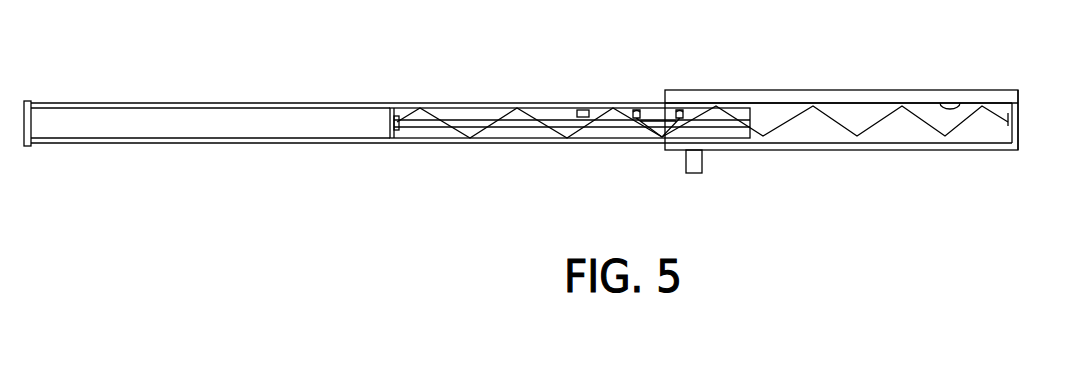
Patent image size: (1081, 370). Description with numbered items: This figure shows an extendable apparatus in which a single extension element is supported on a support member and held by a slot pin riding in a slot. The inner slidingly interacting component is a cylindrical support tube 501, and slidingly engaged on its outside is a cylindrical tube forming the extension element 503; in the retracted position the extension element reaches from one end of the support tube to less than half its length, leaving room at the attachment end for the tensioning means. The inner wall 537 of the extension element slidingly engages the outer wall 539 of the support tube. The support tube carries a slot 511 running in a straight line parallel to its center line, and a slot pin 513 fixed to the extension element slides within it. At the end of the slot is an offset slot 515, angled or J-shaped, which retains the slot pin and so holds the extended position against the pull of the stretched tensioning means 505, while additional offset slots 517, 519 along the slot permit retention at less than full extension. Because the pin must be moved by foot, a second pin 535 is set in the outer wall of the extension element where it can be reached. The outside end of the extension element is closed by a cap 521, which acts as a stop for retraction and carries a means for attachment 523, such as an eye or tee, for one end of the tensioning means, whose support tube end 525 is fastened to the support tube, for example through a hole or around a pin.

The support tube 501 is at (482, 143).
The extension element 503 is at (895, 150).
The tensioning means 505 is at (830, 108).
The slot 511 is at (500, 120).
The slot pin 513 is at (662, 137).
The offset slot 515 is at (681, 110).
The offset slot 517 is at (638, 110).
The offset slot 519 is at (583, 110).
The cap 521 is at (1017, 100).
The means for attachment 523 is at (1005, 130).
The support tube end 525 is at (398, 118).
The second pin 535 is at (703, 164).
The inner wall 537 is at (950, 100).
The outer wall 539 is at (557, 143).